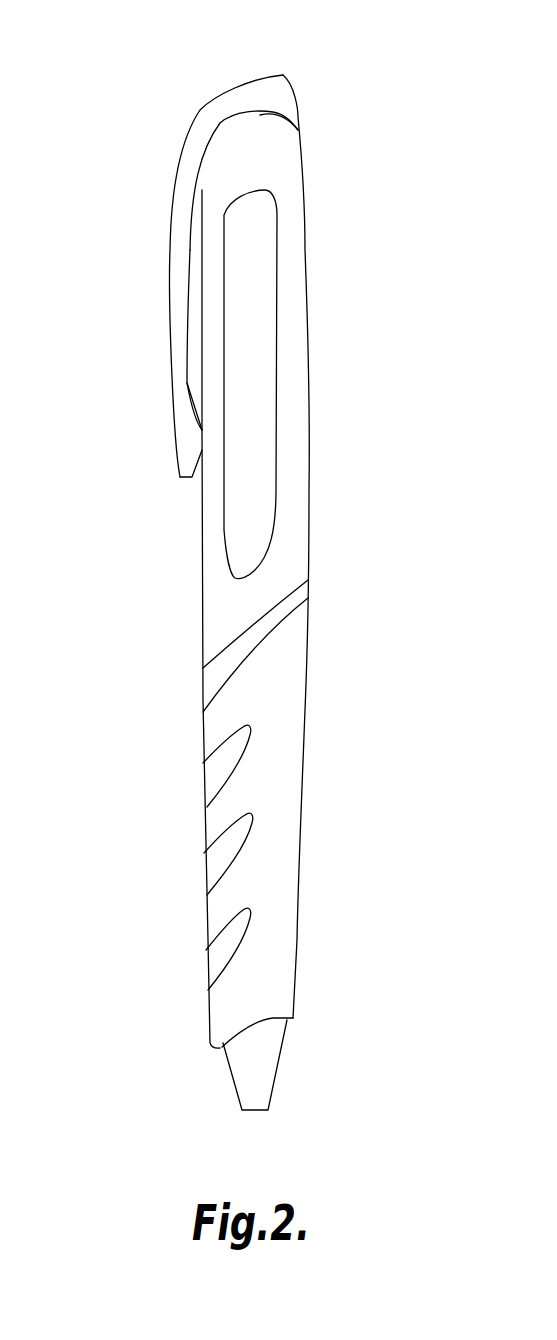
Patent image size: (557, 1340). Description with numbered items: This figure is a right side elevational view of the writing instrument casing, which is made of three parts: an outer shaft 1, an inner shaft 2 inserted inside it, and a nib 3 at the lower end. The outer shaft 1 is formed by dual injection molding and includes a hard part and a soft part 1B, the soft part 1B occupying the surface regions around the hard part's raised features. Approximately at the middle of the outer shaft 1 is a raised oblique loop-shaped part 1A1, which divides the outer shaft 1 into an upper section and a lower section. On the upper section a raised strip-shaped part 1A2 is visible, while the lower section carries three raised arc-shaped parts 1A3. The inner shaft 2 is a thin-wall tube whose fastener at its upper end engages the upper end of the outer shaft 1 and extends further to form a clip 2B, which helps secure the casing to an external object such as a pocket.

The outer shaft 1 is at (240, 597).
The oblique loop-shaped part 1A1 is at (220, 665).
The strip-shaped part 1A2 is at (252, 387).
The arc-shaped part 1A3 is at (220, 768).
The soft part 1B is at (262, 163).
The inner shaft 2 is at (278, 105).
The clip 2B is at (182, 223).
The nib 3 is at (255, 1068).